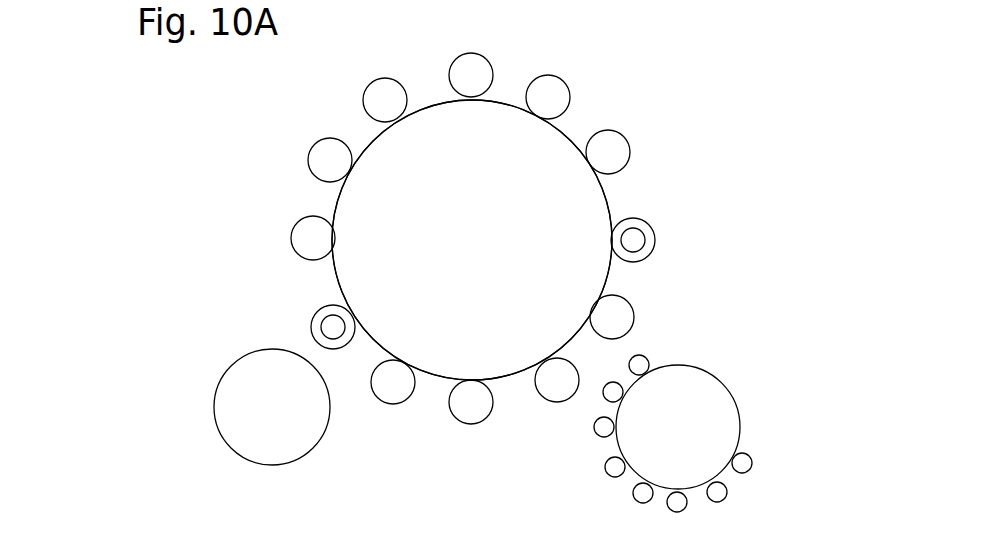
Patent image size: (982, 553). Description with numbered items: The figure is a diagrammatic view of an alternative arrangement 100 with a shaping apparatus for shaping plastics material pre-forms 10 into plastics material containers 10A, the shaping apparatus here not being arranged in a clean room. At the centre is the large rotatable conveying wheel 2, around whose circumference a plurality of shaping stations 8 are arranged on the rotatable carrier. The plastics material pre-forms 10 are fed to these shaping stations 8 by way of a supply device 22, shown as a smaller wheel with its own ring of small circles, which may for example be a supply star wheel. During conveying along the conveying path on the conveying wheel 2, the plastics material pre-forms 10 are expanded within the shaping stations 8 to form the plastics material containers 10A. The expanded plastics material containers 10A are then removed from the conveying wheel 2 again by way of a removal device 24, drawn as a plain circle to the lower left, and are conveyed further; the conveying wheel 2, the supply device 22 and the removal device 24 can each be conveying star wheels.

The alternative arrangement 100 is at (266, 210).
The conveying wheel 2 is at (570, 227).
The shaping stations 8 is at (325, 162).
The plastics material pre-forms 10 is at (630, 238).
The plastics material containers 10A is at (330, 327).
The supply device 22 is at (673, 415).
The removal device 24 is at (278, 430).